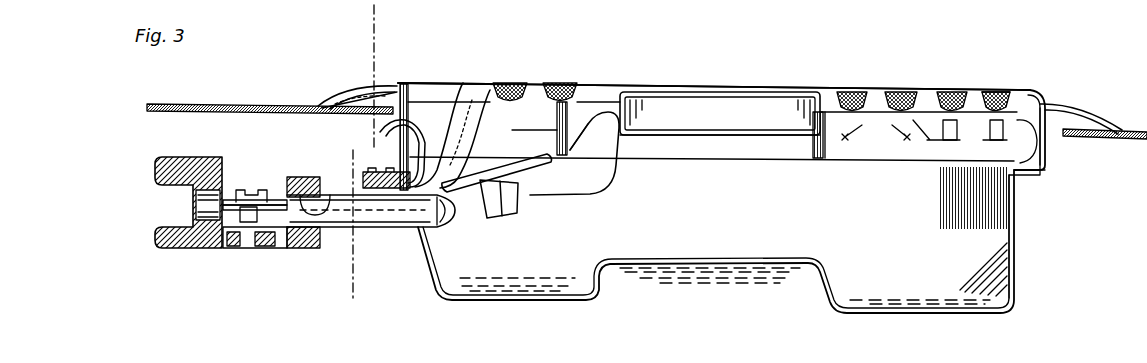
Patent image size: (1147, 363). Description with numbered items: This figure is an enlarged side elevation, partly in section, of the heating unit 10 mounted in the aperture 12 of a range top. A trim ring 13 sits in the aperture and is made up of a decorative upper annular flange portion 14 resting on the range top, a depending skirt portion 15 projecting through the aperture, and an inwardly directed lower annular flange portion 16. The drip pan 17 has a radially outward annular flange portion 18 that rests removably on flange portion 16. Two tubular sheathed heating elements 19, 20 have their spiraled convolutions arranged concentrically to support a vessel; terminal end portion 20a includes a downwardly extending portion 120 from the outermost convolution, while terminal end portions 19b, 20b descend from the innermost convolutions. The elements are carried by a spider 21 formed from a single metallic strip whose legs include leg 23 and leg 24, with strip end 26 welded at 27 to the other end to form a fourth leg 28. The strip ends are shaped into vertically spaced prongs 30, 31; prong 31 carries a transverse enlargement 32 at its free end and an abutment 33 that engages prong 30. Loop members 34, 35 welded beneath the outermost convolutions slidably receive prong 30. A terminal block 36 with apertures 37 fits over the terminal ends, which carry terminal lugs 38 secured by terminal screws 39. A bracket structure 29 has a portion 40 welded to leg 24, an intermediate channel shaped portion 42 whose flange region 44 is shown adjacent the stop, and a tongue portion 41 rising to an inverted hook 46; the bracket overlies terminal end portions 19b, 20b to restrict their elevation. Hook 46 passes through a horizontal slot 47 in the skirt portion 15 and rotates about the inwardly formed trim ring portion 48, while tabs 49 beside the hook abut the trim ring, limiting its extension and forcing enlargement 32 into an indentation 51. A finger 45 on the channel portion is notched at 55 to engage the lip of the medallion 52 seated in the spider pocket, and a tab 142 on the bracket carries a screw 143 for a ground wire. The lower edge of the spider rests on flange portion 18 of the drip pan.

The heating unit 10 is at (383, 17).
The aperture 12 is at (1063, 133).
The trim ring 13 is at (425, 80).
The upper annular flange portion 14 is at (1060, 106).
The skirt portion 15 is at (398, 86).
The lower annular flange portion 16 is at (1016, 178).
The drip pan 17 is at (1003, 278).
The annular flange portion 18 is at (1030, 130).
The heating element 19 is at (1004, 90).
The terminal end portion 19b is at (450, 228).
The heating element 20 is at (948, 90).
The terminal end portion 20a is at (350, 193).
The terminal end portion 20b is at (370, 230).
The spider 21 is at (665, 163).
The leg 23 is at (729, 147).
The leg 24 is at (565, 156).
The strip end 26 is at (887, 147).
The weld 27 is at (876, 129).
The fourth leg 28 is at (837, 163).
The bracket structure 29 is at (544, 201).
The prong 30 is at (920, 165).
The prong 31 is at (957, 180).
The transverse enlargement 32 is at (1047, 167).
The abutment 33 is at (970, 140).
The loop member 34 is at (963, 227).
The loop member 35 is at (948, 110).
The terminal block 36 is at (197, 247).
The aperture 37 is at (330, 192).
The terminal lug 38 is at (280, 198).
The terminal screw 39 is at (250, 188).
The portion 40 is at (523, 130).
The tongue portion 41 is at (377, 140).
The intermediate channel shaped portion 42 is at (502, 205).
The stop face 44 is at (493, 204).
The finger 45 is at (593, 178).
The inverted hook 46 is at (330, 106).
The horizontal slot 47 is at (367, 86).
The trim ring portion 48 is at (470, 182).
The tab 49 is at (417, 128).
The indentation 51 is at (1047, 153).
The medallion 52 is at (715, 92).
The notch 55 is at (578, 158).
The downwardly extending portion 120 is at (457, 112).
The tab 142 is at (405, 217).
The screw 143 is at (404, 173).